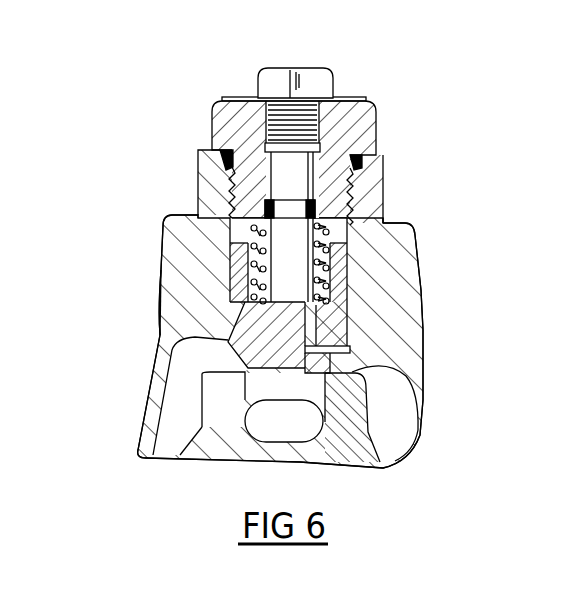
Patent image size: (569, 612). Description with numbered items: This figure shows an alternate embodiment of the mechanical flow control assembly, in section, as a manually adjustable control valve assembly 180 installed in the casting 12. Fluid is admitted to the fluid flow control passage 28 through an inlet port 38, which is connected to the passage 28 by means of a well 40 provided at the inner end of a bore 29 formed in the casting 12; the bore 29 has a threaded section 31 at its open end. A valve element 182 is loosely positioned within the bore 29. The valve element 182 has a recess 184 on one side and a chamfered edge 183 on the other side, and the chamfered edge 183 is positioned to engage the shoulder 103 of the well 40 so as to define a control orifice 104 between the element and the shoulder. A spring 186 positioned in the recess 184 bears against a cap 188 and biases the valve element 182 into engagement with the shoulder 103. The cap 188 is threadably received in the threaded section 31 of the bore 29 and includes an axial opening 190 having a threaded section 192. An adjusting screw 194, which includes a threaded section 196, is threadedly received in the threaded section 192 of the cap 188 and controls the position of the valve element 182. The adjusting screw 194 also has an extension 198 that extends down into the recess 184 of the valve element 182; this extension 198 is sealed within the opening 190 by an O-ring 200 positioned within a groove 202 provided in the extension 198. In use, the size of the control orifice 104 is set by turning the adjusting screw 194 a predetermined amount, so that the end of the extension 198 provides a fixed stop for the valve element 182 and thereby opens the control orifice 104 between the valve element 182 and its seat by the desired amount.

The casting 12 is at (424, 297).
The fluid flow control passage 28 is at (187, 424).
The bore 29 is at (345, 322).
The threaded section 31 is at (362, 191).
The inlet port 38 is at (302, 429).
The well 40 is at (245, 388).
The shoulder 103 is at (357, 394).
The control orifice 104 is at (338, 363).
The manually adjustable control valve assembly 180 is at (358, 232).
The valve element 182 is at (230, 312).
The chamfered edge 183 is at (240, 356).
The recess 184 is at (337, 265).
The spring 186 is at (262, 237).
The cap 188 is at (360, 142).
The axial opening 190 is at (291, 166).
The threaded section 192 is at (370, 108).
The adjusting screw 194 is at (330, 80).
The threaded section 196 is at (266, 120).
The extension 198 is at (250, 281).
The O-ring 200 is at (264, 208).
The groove 202 is at (222, 186).